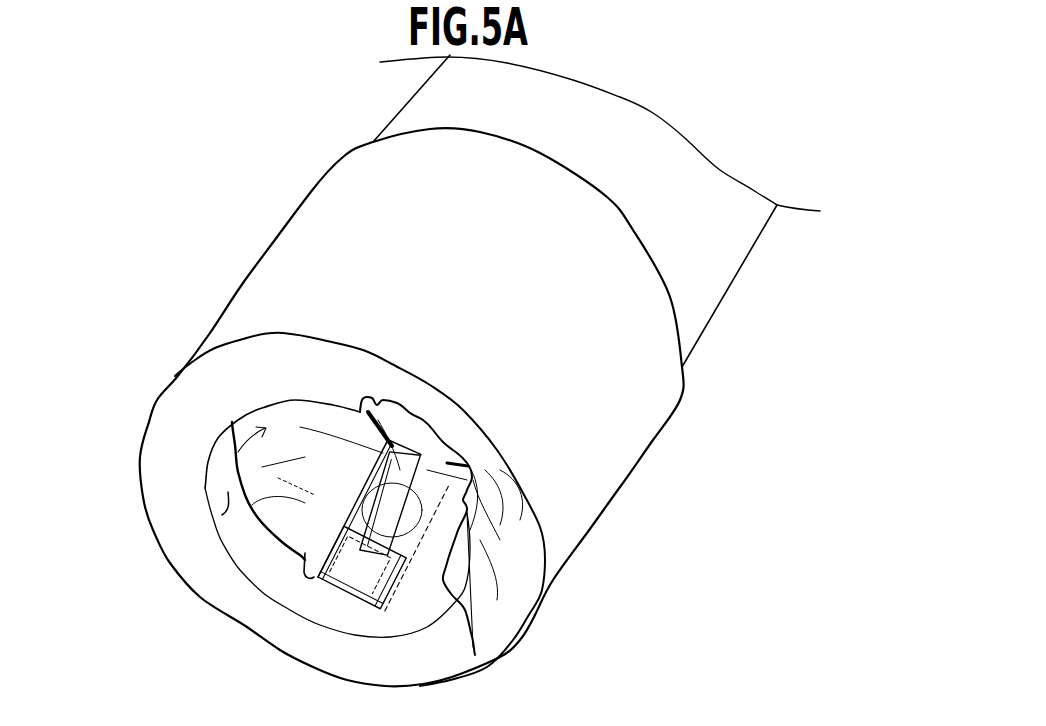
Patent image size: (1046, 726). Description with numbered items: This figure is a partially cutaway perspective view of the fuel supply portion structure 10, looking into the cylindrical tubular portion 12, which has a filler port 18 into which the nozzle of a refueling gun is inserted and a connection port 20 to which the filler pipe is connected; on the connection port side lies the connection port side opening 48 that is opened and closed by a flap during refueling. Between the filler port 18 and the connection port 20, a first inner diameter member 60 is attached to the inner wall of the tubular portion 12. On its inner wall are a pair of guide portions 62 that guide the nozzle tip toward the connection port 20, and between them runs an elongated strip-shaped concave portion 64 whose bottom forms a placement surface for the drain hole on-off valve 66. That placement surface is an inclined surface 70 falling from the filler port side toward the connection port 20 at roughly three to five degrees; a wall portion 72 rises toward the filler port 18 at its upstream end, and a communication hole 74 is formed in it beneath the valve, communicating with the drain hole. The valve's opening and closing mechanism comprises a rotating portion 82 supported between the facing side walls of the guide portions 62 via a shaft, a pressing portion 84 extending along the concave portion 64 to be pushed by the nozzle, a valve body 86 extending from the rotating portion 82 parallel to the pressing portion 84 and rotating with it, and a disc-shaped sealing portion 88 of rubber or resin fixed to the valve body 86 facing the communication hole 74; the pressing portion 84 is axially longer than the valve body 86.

The fuel supply portion structure 10 is at (188, 188).
The tubular portion 12 is at (349, 207).
The filler port 18 is at (215, 512).
The connection port 20 is at (378, 400).
The connection port side opening 48 is at (285, 398).
The first inner diameter member 60 is at (232, 448).
The guide portions 62 is at (330, 440).
The concave portion 64 is at (322, 580).
The drain hole on-off valve 66 is at (436, 462).
The inclined surface 70 is at (470, 455).
The wall portion 72 is at (365, 585).
The communication hole 74 is at (430, 455).
The rotating portion 82 is at (363, 572).
The pressing portion 84 is at (262, 410).
The valve body 86 is at (500, 495).
The disc-shaped sealing portion 88 is at (500, 555).